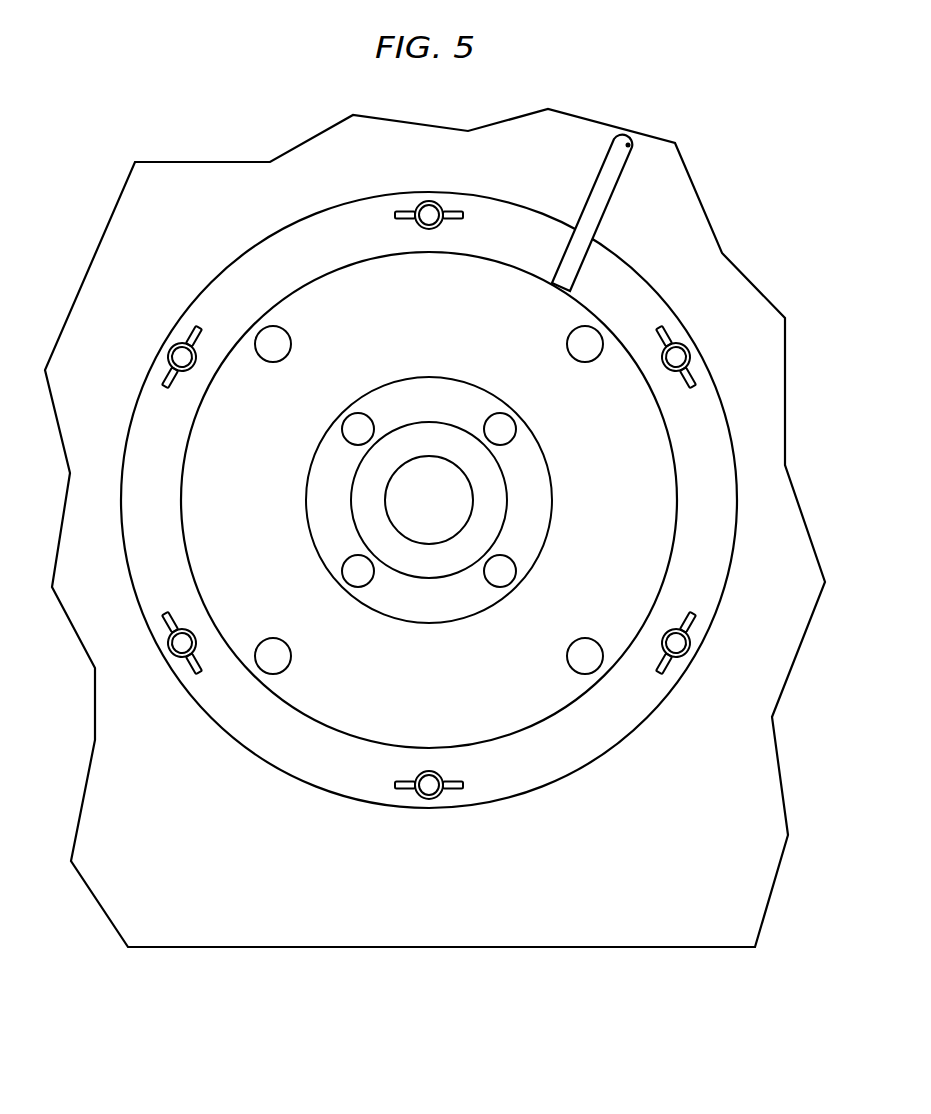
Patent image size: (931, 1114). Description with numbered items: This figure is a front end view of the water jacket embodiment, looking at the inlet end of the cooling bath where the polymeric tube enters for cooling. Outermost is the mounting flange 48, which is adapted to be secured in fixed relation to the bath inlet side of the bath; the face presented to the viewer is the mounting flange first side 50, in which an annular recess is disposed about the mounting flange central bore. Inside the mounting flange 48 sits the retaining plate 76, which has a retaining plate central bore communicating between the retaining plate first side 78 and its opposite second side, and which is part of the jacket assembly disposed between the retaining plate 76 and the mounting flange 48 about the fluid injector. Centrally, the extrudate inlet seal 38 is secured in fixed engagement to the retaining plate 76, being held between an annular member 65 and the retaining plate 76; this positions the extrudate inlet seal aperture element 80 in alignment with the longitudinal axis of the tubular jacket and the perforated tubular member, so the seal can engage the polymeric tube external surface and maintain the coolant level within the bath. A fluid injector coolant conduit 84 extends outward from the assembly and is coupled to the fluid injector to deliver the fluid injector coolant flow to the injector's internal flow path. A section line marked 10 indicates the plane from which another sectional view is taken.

The section line / sectional view indicator 10 is at (429, 990).
The extrudate inlet seal 38 is at (492, 513).
The mounting flange 48 is at (275, 232).
The mounting flange first side 50 is at (342, 225).
The annular member 65 is at (537, 473).
The retaining plate 76 is at (258, 318).
The retaining plate first side 78 is at (213, 430).
The extrudate inlet seal aperture element 80 is at (449, 542).
The fluid injector coolant conduit 84 is at (617, 185).